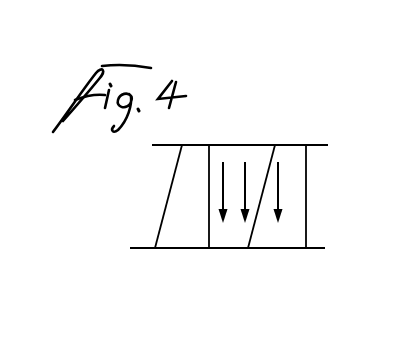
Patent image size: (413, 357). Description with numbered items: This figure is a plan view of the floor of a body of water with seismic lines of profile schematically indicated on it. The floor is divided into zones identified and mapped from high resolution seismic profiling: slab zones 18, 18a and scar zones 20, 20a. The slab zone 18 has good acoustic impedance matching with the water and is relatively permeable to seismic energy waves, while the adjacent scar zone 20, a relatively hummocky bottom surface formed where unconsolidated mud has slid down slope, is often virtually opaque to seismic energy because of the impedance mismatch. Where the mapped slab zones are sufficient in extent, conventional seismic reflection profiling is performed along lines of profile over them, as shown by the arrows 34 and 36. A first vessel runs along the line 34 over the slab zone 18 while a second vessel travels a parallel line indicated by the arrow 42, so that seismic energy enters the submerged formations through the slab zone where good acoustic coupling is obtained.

The slab zone 18 is at (236, 236).
The slab zone 18a is at (152, 185).
The scar zone 20 is at (178, 234).
The scar zone 20a is at (295, 238).
The seismic line of profile 34 is at (221, 176).
The seismic line of profile 36 is at (247, 176).
The line of travel of second vessel 42 is at (281, 186).